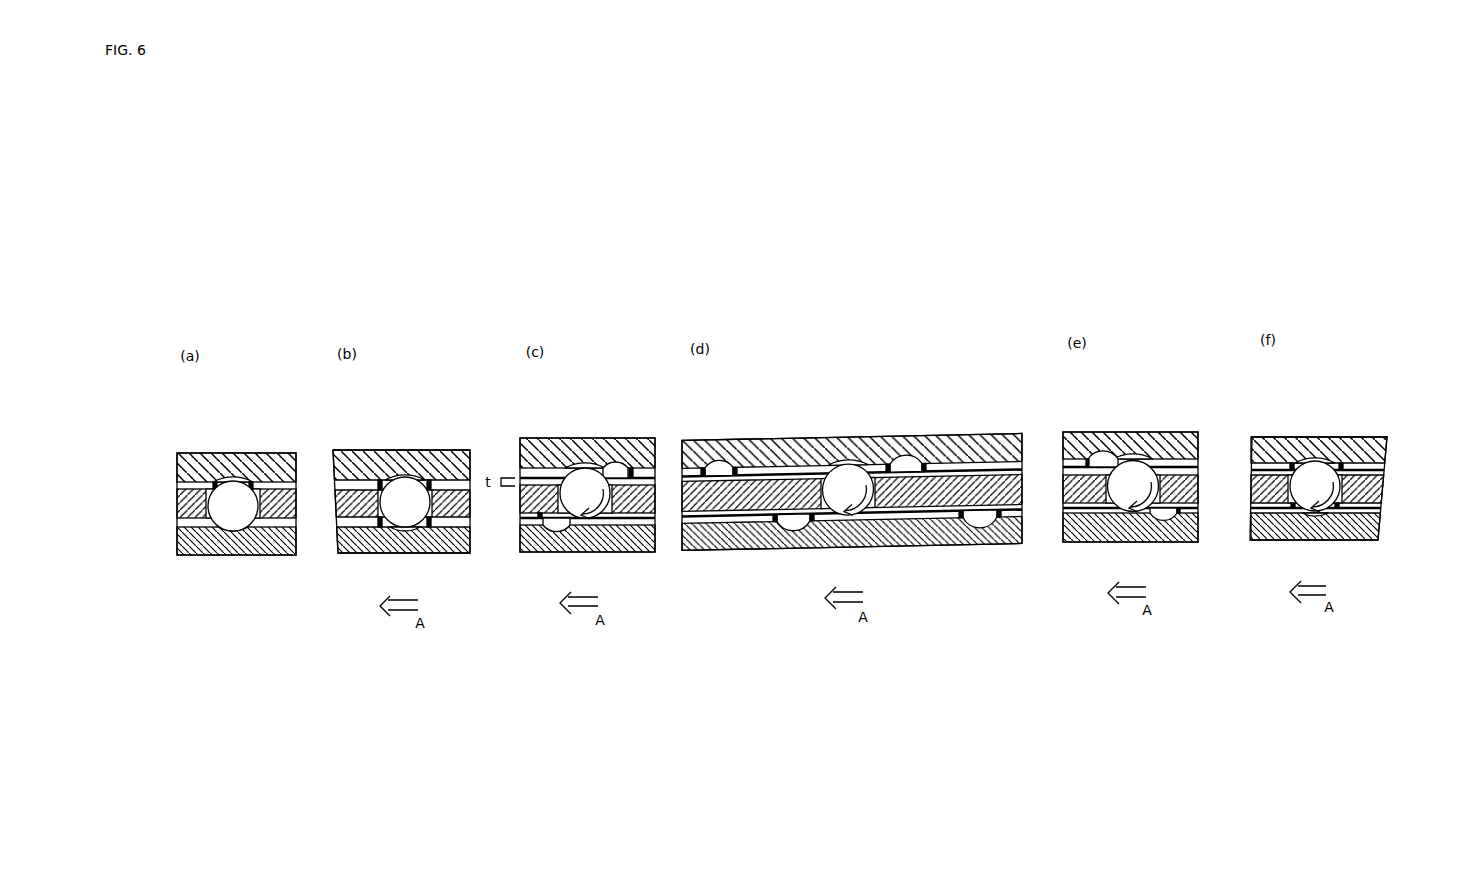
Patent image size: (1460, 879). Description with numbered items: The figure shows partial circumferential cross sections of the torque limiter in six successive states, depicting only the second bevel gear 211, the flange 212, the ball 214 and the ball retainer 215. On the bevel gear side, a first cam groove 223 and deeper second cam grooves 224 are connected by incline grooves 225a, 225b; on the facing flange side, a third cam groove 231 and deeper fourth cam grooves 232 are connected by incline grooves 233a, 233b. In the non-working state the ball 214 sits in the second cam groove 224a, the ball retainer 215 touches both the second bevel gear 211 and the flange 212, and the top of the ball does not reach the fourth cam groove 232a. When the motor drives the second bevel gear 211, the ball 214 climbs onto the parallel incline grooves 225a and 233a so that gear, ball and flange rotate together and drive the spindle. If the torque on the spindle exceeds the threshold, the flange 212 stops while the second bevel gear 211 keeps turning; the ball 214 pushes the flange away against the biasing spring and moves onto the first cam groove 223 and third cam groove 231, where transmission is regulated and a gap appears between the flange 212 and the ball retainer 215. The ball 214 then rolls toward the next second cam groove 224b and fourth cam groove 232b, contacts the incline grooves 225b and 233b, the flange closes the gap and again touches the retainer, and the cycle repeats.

The second bevel gear 211 is at (184, 550).
The flange 212 is at (177, 456).
The ball 214 is at (241, 492).
The ball retainer 215 is at (179, 503).
The first cam groove 223 is at (197, 540).
The second cam groove 224 is at (233, 531).
The second cam groove 224a is at (394, 530).
The second cam groove 224b is at (968, 514).
The incline groove 225a is at (427, 528).
The incline groove 225b is at (380, 528).
The third cam groove 231 is at (189, 459).
The fourth cam groove 232 is at (231, 480).
The fourth cam groove 232a is at (408, 478).
The fourth cam groove 232b is at (722, 460).
The incline groove 233a is at (380, 480).
The incline groove 233b is at (431, 478).